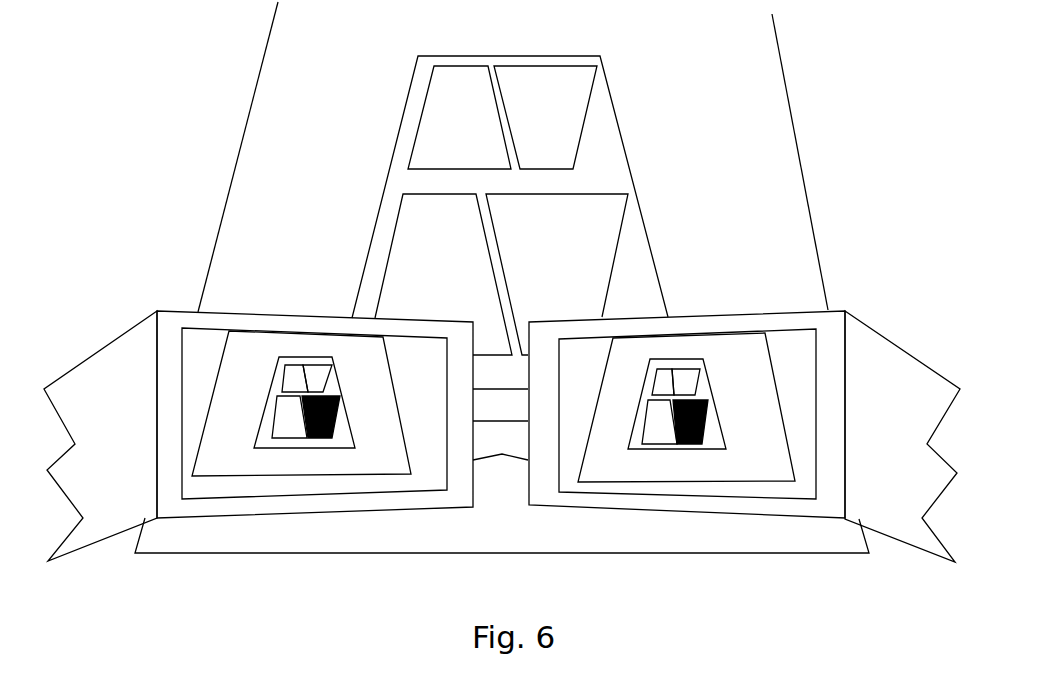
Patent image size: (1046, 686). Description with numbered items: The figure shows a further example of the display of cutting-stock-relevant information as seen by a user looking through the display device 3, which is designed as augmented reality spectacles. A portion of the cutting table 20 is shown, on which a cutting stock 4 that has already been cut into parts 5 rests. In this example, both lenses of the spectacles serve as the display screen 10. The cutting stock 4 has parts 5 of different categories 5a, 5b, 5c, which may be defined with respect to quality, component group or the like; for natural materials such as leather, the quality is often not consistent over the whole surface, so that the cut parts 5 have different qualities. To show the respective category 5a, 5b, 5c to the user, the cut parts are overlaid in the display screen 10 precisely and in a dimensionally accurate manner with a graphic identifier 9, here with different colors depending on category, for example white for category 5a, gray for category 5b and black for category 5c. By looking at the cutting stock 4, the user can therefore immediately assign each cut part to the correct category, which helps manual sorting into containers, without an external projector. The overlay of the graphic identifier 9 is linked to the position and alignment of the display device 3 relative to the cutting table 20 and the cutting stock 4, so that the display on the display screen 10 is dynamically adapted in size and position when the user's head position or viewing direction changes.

The display device 3 is at (502, 413).
The cutting stock 4 is at (506, 524).
The parts 5 is at (559, 210).
The category 5a is at (459, 117).
The category 5b is at (486, 210).
The category 5c is at (557, 274).
The graphic identifier 9 is at (722, 393).
The display screen 10 is at (506, 374).
The cutting table 20 is at (513, 157).